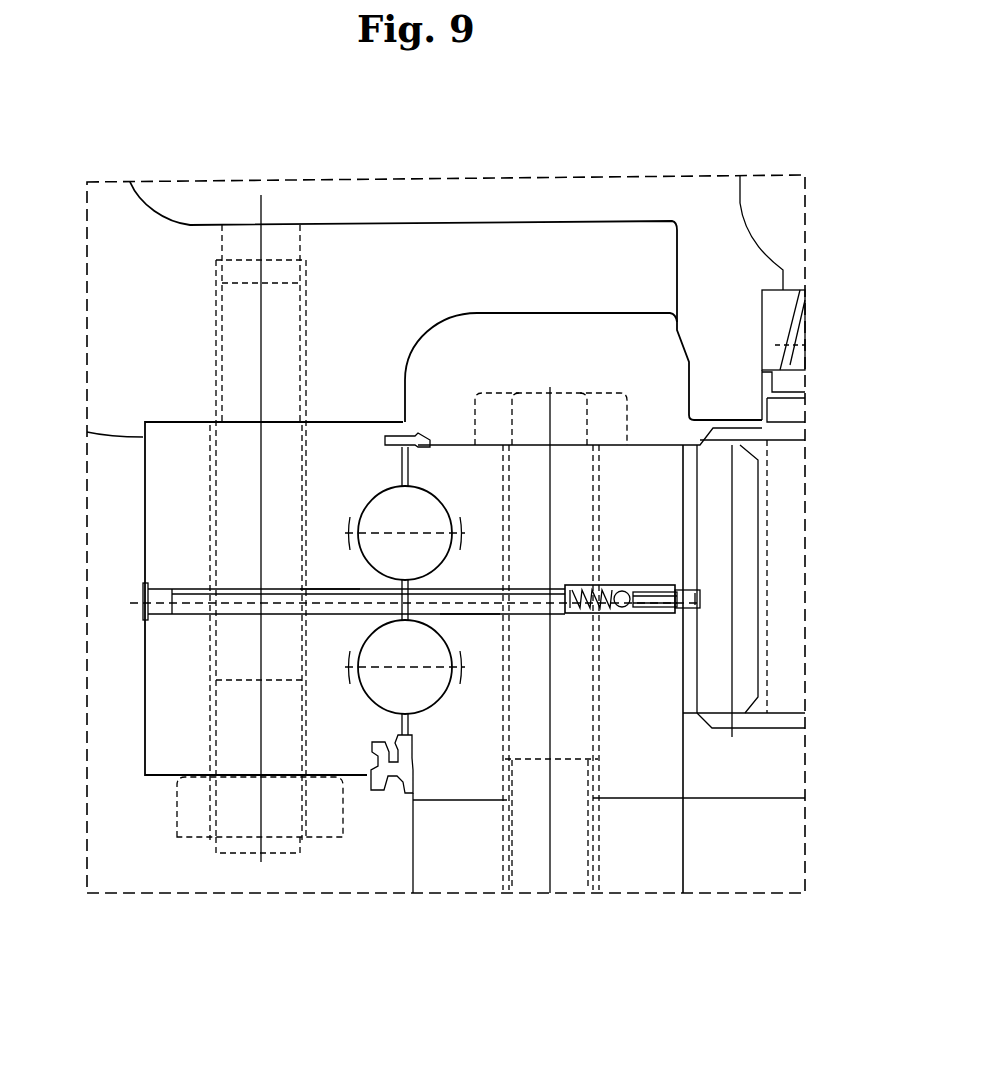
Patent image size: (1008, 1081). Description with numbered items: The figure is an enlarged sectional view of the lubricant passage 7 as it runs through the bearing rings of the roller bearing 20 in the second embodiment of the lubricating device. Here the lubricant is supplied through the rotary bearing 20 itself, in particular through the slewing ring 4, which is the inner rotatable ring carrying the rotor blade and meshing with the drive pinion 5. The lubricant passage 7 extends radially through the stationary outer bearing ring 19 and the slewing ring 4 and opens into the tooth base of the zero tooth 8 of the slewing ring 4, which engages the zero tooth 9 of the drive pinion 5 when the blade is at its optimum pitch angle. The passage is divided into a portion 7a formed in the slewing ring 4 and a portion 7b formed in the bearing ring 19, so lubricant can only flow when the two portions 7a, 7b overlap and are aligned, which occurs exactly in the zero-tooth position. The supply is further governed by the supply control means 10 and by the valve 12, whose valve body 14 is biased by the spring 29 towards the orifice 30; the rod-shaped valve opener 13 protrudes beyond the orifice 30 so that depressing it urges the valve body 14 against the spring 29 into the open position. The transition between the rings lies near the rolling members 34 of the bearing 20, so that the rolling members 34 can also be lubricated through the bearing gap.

The slewing ring 4 is at (638, 758).
The drive pinion 5 is at (793, 593).
The lubricant passage 7 is at (192, 618).
The lubricant passage portion 7a is at (467, 610).
The lubricant passage portion 7b is at (333, 610).
The zero tooth 8 is at (753, 695).
The zero tooth 9 is at (692, 695).
The supply control means 10 is at (713, 575).
The valve 12 is at (617, 583).
The valve opener 13 is at (663, 607).
The valve body 14 is at (625, 605).
The outer bearing ring 19 is at (153, 700).
The roller bearing 20 is at (363, 806).
The spring 29 is at (583, 590).
The orifice 30 is at (683, 587).
The rolling members 34 is at (420, 692).